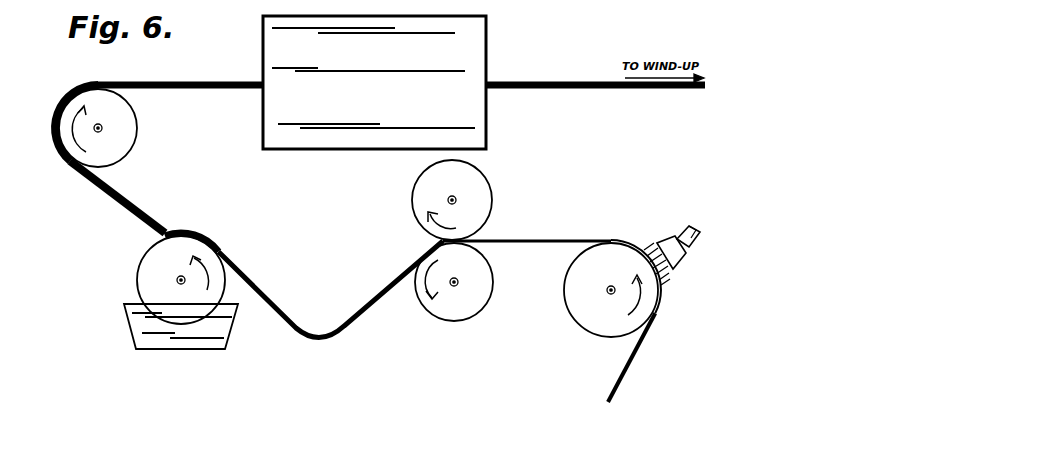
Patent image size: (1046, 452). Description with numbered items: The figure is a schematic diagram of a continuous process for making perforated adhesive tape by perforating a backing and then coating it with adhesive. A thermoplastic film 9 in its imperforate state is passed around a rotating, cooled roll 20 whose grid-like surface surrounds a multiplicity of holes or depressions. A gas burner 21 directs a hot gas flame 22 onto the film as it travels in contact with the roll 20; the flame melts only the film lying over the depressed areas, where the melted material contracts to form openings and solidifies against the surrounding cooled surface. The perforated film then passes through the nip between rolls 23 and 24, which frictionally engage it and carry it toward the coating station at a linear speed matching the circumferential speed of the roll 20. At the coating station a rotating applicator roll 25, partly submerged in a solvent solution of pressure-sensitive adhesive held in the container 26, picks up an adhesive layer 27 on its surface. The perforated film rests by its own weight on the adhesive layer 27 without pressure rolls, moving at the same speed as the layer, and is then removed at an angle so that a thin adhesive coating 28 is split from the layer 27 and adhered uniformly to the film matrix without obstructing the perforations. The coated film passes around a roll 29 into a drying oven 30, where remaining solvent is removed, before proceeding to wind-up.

The thermoplastic film 9 is at (618, 382).
The roll 20 is at (587, 315).
The gas burner 21 is at (691, 229).
The hot gas flame 22 is at (648, 245).
The roll 23 is at (476, 190).
The roll 24 is at (453, 310).
The applicator roll 25 is at (152, 258).
The container 26 is at (158, 342).
The adhesive layer 27 is at (136, 273).
The adhesive coating 28 is at (75, 168).
The roll 29 is at (125, 132).
The drying oven 30 is at (465, 43).